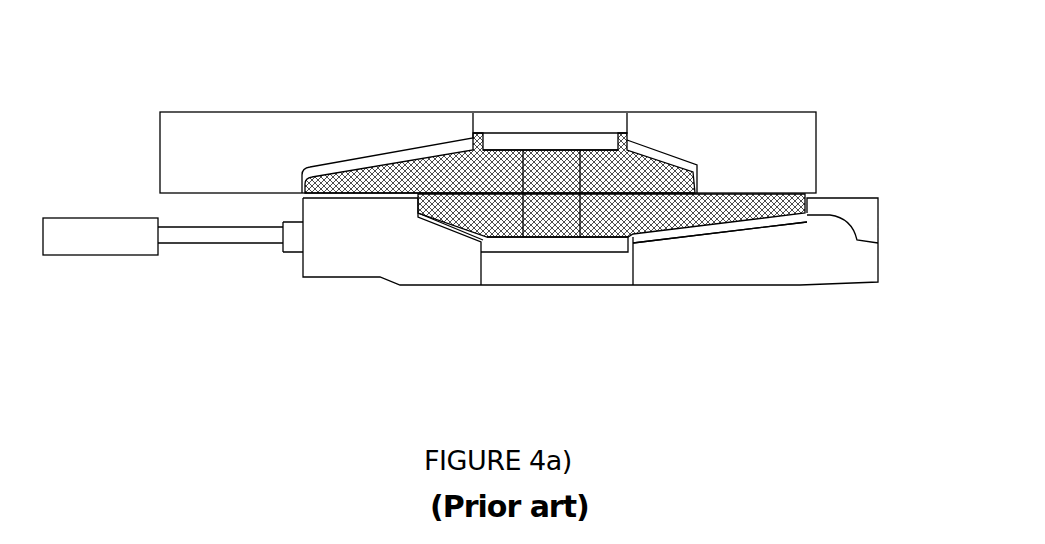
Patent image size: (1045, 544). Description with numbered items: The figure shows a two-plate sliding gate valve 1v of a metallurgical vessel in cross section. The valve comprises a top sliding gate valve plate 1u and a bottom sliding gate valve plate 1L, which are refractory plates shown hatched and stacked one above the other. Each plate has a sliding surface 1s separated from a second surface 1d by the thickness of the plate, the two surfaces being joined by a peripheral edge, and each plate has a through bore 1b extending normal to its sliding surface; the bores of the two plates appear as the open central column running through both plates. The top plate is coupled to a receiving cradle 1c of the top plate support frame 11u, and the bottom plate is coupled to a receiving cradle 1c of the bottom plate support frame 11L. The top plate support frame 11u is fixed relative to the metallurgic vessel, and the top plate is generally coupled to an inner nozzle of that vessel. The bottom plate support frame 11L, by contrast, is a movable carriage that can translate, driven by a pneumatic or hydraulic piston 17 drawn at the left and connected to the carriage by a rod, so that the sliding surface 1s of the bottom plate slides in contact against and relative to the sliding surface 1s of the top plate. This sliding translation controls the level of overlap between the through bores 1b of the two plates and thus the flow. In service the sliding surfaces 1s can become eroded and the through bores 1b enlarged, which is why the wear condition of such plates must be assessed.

The sliding gate valve 1v is at (137, 120).
The top plate support frame 11u is at (272, 112).
The bottom plate support frame 11L is at (857, 197).
The top sliding gate valve plate 1u is at (650, 180).
The bottom sliding gate valve plate 1L is at (767, 203).
The through bore 1b is at (560, 187).
The receiving cradle 1c is at (377, 150).
The second surface 1d is at (497, 153).
The sliding surface 1s is at (377, 150).
The pneumatic or hydraulic piston 17 is at (178, 252).